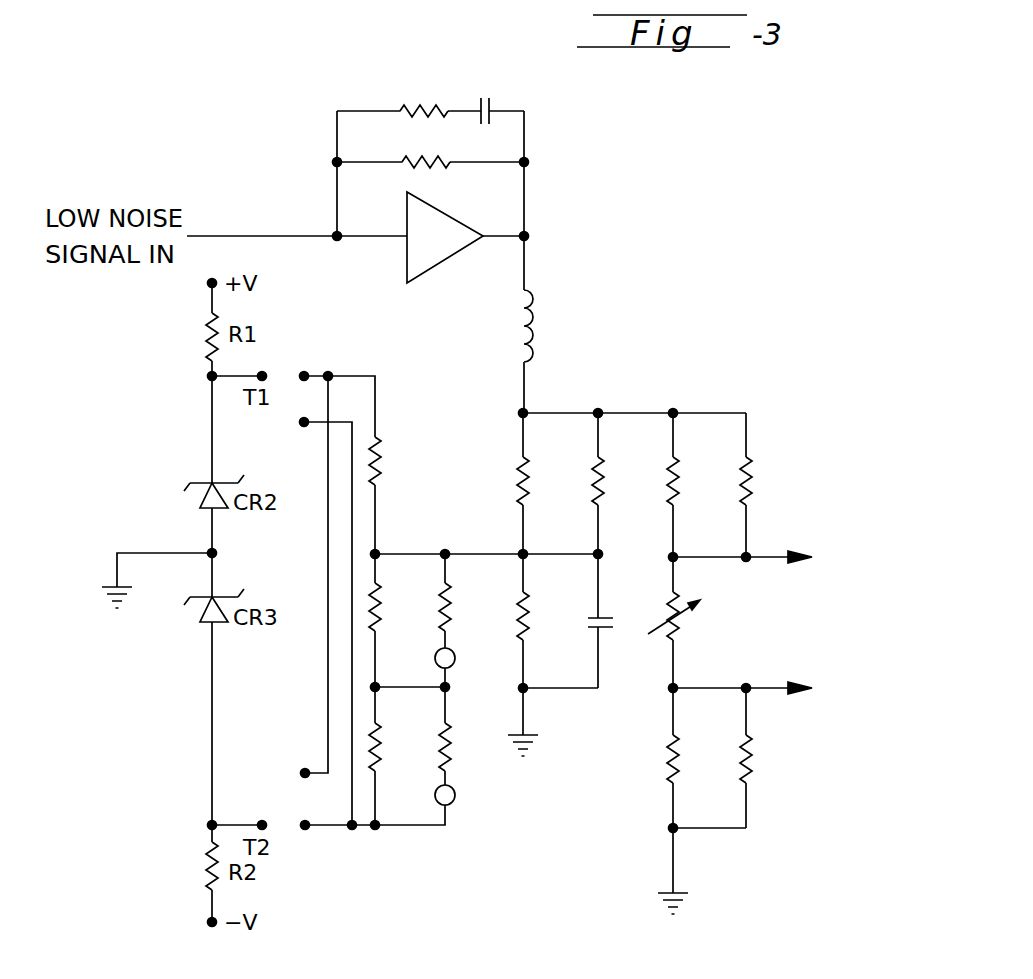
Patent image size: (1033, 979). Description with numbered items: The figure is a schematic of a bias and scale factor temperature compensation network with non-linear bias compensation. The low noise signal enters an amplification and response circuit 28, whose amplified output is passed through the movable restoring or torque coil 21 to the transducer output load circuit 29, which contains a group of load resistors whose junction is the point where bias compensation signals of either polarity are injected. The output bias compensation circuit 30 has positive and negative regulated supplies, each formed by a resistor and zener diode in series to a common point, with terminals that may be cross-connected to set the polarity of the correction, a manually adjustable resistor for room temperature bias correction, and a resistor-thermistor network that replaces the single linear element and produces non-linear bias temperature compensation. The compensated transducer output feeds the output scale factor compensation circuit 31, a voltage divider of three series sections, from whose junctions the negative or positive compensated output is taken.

The torque coil 21 is at (537, 318).
The amplification and response circuit 28 is at (534, 166).
The transducer output load circuit 29 is at (570, 744).
The output bias compensation circuit 30 is at (446, 846).
The output scale factor compensation circuit 31 is at (770, 870).